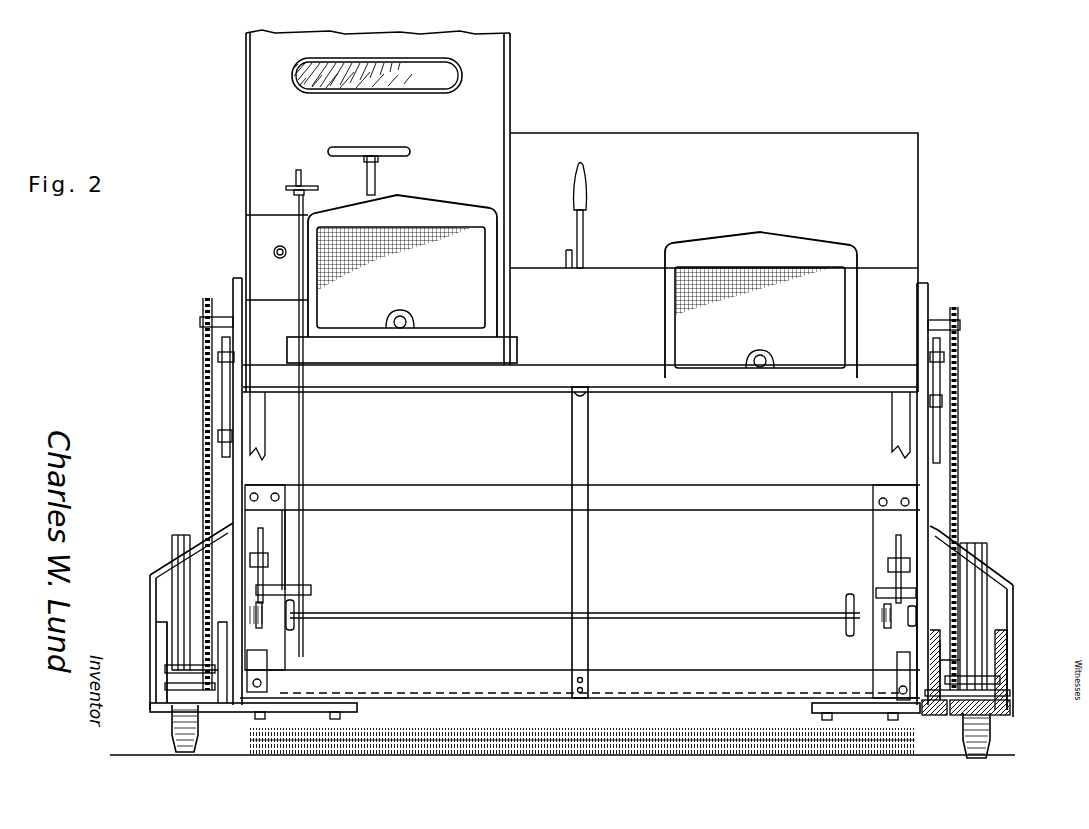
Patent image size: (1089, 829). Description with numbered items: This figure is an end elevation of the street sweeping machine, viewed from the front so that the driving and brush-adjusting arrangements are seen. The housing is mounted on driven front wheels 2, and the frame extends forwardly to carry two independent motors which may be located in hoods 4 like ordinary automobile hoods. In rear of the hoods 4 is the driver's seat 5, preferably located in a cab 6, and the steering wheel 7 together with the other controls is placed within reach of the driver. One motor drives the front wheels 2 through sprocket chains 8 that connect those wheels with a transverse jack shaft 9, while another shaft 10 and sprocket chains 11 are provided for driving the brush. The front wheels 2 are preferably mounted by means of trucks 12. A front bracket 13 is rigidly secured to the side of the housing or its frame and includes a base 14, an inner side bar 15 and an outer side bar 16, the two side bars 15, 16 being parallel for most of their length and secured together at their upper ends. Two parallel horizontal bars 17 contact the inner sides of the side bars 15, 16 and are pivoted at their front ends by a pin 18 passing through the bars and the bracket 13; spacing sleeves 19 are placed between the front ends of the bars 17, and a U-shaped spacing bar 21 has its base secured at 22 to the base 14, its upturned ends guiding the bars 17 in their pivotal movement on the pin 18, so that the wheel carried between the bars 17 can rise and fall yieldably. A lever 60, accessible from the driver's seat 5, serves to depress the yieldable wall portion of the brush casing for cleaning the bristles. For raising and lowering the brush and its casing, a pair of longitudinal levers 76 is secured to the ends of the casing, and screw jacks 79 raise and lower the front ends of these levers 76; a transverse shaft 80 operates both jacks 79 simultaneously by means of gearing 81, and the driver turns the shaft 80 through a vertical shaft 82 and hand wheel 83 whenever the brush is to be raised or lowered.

The front wheels 2 is at (185, 532).
The hoods 4 is at (442, 213).
The driver's seat 5 is at (258, 208).
The cab 6 is at (250, 80).
The steering wheel 7 is at (403, 149).
The sprocket chains 8 is at (205, 402).
The jack shaft 9 is at (220, 318).
The shaft 10 is at (216, 361).
The sprocket chains 11 is at (222, 437).
The trucks 12 is at (142, 656).
The front bracket 13 is at (162, 566).
The base 14 is at (178, 702).
The inner side bar 15 is at (242, 485).
The outer side bar 16 is at (152, 596).
The horizontal bars 17 is at (163, 663).
The pin 18 is at (208, 692).
The spacing sleeves 19 is at (170, 686).
The U-shaped spacing bar 21 is at (942, 716).
The securing point 22 is at (958, 718).
The lever 60 is at (586, 196).
The longitudinal levers 76 is at (262, 540).
The screw jacks 79 is at (268, 568).
The transverse shaft 80 is at (383, 612).
The gearing 81 is at (270, 622).
The vertical shaft 82 is at (306, 210).
The hand wheel 83 is at (304, 187).